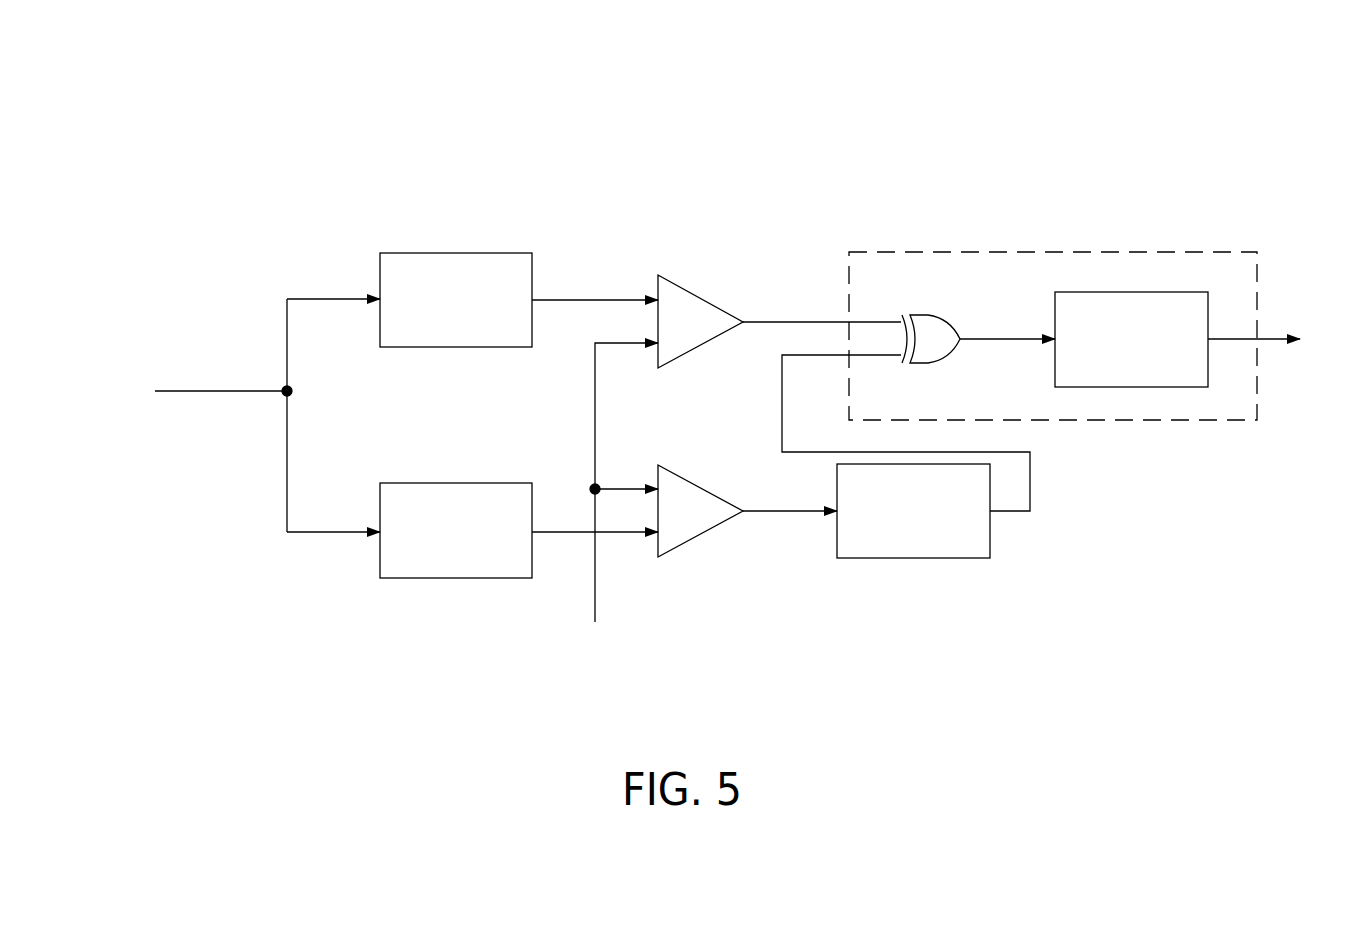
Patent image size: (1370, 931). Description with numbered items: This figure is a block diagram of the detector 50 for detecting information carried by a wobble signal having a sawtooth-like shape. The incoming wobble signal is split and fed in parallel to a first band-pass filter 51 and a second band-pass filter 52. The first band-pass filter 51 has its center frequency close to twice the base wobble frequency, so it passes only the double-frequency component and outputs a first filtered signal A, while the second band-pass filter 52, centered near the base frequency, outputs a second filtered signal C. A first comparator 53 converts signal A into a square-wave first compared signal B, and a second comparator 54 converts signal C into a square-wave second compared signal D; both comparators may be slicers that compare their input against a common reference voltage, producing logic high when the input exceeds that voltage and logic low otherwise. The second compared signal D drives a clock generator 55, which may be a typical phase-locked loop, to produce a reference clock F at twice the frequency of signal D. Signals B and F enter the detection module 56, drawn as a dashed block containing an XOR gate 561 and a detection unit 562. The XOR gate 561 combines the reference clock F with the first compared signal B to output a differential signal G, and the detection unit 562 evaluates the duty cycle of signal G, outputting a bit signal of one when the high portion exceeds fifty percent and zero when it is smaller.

The detector 50 is at (765, 180).
The first band-pass filter 51 is at (465, 253).
The second band-pass filter 52 is at (452, 578).
The first comparator 53 is at (692, 293).
The second comparator 54 is at (692, 537).
The clock generator 55 is at (913, 548).
The detection module 56 is at (1013, 262).
The XOR gate 561 is at (928, 323).
The detection unit 562 is at (1137, 300).